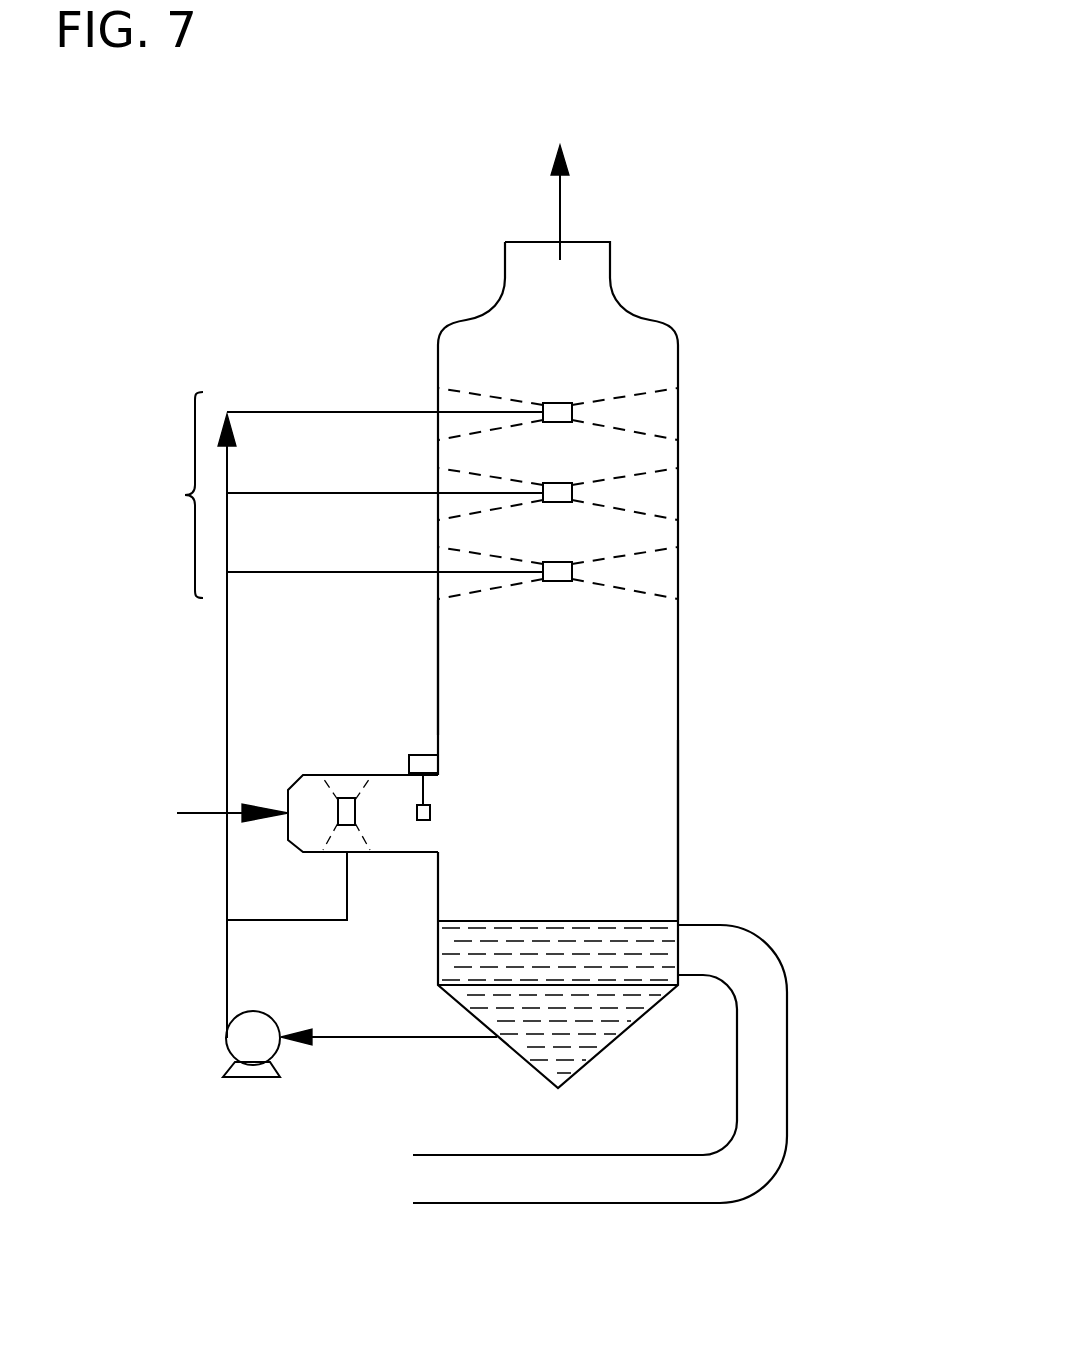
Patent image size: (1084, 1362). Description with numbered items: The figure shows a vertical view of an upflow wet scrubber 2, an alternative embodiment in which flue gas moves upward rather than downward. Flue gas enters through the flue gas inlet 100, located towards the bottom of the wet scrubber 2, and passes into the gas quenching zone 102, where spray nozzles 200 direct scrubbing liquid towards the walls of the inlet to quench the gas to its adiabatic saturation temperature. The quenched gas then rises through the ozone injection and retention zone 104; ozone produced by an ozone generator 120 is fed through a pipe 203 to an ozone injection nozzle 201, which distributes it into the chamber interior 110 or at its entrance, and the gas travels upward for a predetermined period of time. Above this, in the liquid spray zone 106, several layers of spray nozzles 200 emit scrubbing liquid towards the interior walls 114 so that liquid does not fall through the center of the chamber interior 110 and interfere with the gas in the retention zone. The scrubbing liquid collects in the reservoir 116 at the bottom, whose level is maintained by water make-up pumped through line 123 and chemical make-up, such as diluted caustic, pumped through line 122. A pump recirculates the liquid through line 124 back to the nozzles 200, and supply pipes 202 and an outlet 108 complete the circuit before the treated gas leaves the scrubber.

The wet scrubber 2 is at (862, 180).
The flue gas inlet 100 is at (288, 795).
The gas quenching zone 102 is at (377, 768).
The ozone injection and retention zone 104 is at (705, 905).
The liquid spray zone 106 is at (164, 495).
The gas outlet 108 is at (585, 242).
The chamber interior 110 is at (577, 652).
The interior walls 114 is at (678, 822).
The reservoir 116 is at (538, 1050).
The ozone generator 120 is at (423, 755).
The line 122 is at (737, 1033).
The line 123 is at (787, 1107).
The line 124 is at (227, 705).
The spray nozzles 200 is at (558, 562).
The ozone injection nozzle 201 is at (430, 813).
The liquid supply pipe 202 is at (328, 572).
The pipe 203 is at (423, 782).